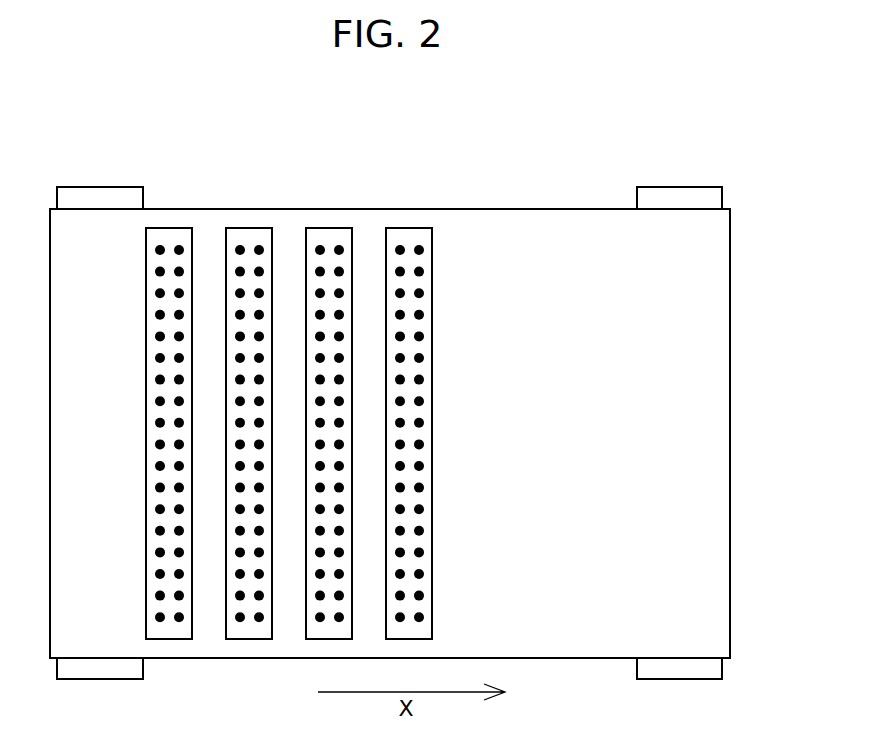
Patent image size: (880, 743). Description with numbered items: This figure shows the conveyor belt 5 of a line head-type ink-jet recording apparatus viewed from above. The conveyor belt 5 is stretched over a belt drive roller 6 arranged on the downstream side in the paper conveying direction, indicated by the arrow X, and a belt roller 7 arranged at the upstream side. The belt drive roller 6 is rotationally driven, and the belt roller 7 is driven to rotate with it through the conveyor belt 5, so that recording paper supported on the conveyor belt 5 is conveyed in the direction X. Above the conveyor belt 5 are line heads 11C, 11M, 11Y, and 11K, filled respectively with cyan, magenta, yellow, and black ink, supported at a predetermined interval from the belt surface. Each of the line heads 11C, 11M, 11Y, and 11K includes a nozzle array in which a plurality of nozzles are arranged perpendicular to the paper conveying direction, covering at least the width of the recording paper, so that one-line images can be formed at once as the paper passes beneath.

The conveyor belt 5 is at (720, 599).
The belt drive roller 6 is at (679, 198).
The belt roller 7 is at (100, 198).
The line head 11C is at (174, 236).
The line head 11M is at (254, 236).
The line head 11Y is at (336, 236).
The line head 11K is at (416, 236).